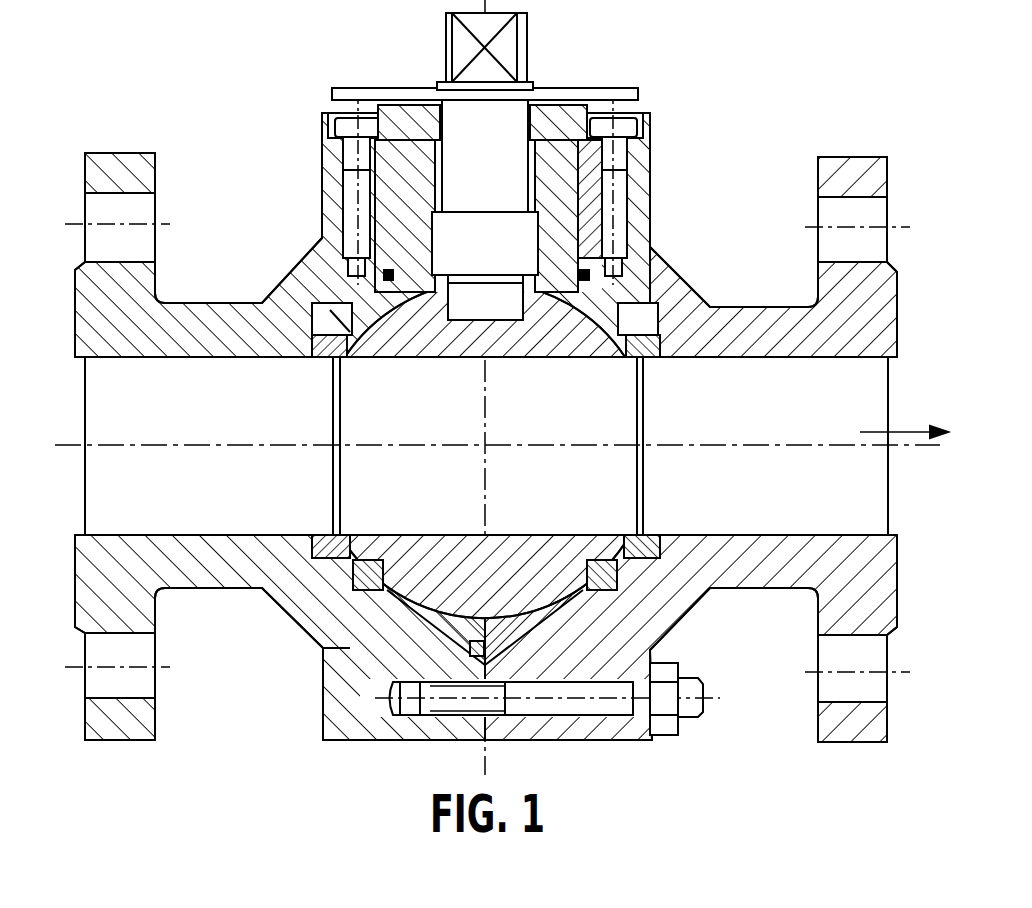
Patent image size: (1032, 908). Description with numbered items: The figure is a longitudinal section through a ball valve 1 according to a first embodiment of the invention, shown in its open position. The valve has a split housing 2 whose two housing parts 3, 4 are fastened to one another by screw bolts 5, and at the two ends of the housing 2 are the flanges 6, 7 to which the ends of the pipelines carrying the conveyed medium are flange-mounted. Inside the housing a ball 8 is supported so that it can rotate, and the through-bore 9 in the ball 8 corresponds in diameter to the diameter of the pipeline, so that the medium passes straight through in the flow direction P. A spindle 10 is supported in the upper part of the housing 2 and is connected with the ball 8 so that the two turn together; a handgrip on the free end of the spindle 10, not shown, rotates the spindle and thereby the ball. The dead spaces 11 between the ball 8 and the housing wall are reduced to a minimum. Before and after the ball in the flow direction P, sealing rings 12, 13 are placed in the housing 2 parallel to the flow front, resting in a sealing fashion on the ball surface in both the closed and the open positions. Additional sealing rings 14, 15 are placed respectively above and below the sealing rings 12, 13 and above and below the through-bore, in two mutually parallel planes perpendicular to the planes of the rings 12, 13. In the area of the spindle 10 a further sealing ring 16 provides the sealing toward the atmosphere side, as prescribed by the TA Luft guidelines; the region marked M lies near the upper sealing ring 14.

The ball valve 1 is at (690, 176).
The split housing 2 is at (748, 312).
The housing part 3 is at (763, 588).
The housing part 4 is at (243, 586).
The screw bolts 5 is at (650, 664).
The flange 6 is at (853, 152).
The flange 7 is at (120, 170).
The ball 8 is at (578, 360).
The through-bore 9 is at (586, 505).
The spindle 10 is at (507, 58).
The dead spaces 11 is at (412, 606).
The sealing ring 12 is at (314, 357).
The sealing ring 13 is at (650, 357).
The additional sealing ring 14 is at (347, 312).
The additional sealing ring 15 is at (618, 580).
The additional sealing ring 16 is at (540, 158).
The seal region M is at (322, 300).
The flow direction P is at (904, 419).